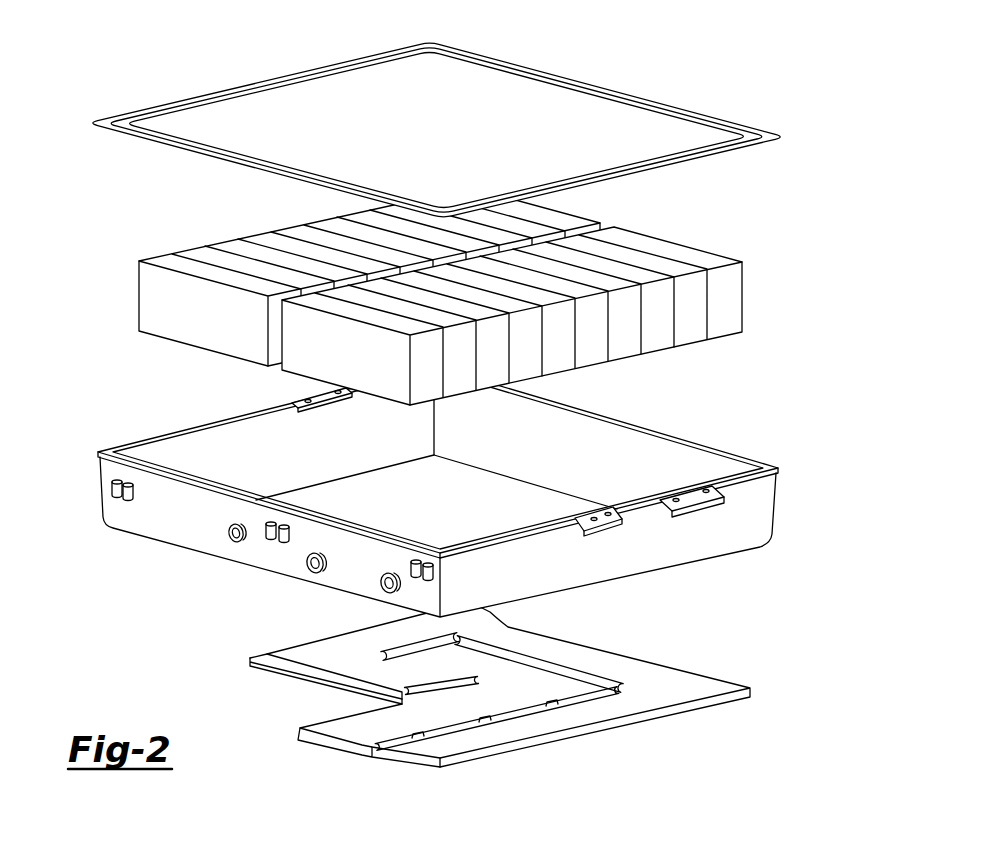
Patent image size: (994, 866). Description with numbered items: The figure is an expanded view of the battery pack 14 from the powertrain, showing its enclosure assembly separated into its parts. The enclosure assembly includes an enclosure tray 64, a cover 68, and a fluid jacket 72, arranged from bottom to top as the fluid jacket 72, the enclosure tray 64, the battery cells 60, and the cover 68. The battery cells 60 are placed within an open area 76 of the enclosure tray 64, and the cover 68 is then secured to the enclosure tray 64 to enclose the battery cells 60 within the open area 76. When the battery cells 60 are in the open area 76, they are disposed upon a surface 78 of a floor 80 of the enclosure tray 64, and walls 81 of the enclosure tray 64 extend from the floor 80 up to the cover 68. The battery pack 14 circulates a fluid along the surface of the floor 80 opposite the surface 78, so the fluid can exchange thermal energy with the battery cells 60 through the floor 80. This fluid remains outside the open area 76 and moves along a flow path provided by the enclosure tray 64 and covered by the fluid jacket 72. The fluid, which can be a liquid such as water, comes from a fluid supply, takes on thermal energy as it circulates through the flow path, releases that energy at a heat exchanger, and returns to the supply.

The battery pack 14 is at (412, 115).
The battery cells 60 is at (579, 217).
The enclosure tray 64 is at (435, 492).
The cover 68 is at (99, 122).
The fluid jacket 72 is at (300, 734).
The open area 76 is at (246, 458).
The surface 78 is at (552, 503).
The floor 80 is at (362, 497).
The walls 81 is at (702, 473).